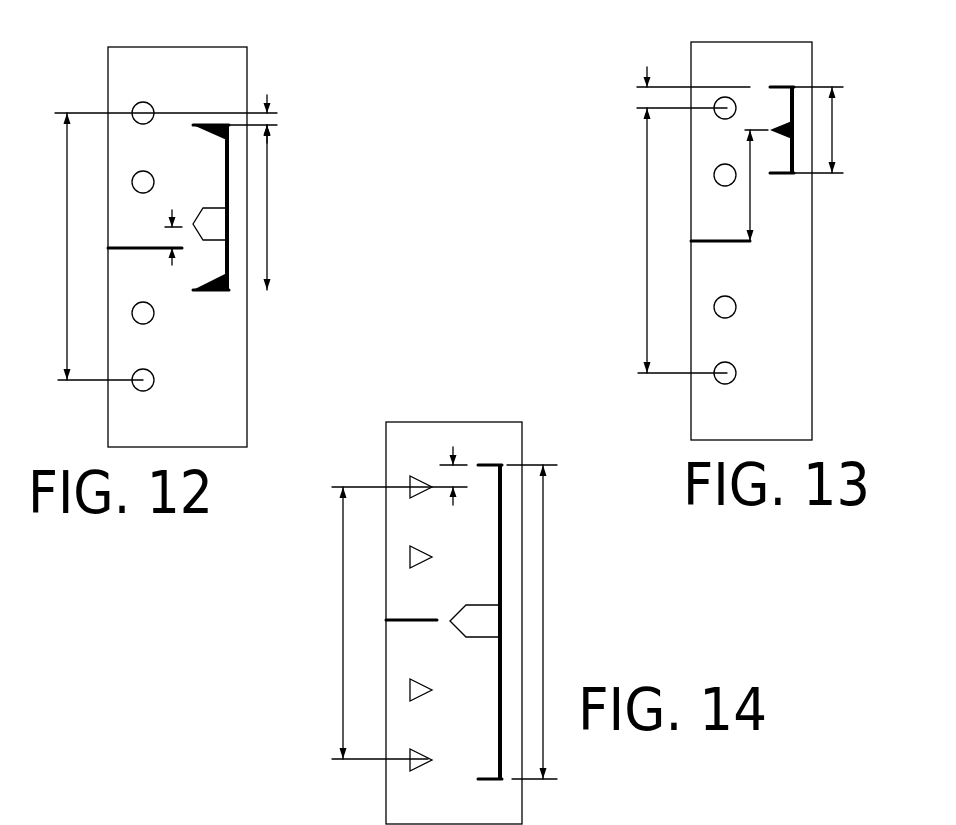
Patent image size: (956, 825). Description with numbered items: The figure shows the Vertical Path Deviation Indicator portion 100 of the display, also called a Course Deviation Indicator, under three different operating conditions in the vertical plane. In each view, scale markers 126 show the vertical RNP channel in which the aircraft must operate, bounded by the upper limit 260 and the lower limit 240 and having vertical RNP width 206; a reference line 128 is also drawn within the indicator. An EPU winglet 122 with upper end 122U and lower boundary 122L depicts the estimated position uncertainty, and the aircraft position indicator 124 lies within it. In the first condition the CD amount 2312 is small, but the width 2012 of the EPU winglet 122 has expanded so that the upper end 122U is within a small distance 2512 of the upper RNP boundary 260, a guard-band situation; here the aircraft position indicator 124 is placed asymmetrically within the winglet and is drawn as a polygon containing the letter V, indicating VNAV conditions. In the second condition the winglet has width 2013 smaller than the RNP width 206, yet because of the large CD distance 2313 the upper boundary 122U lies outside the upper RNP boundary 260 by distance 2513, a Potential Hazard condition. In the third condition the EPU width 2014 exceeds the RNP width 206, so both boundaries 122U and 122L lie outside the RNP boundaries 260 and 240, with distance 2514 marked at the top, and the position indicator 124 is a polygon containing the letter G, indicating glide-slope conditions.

In FIG. 12, the Vertical Path Deviation Indicator portion 100 is at (230, 437).
In FIG. 13, the Vertical Path Deviation Indicator portion 100 is at (790, 429).
In FIG. 14, the Vertical Path Deviation Indicator portion 100 is at (452, 818).
In FIG. 12, the EPU winglet 122 is at (228, 221).
In FIG. 13, the EPU winglet 122 is at (776, 140).
In FIG. 14, the EPU winglet 122 is at (502, 590).
In FIG. 12, the upper end of winglet 122U is at (203, 124).
In FIG. 13, the upper end of winglet 122U is at (790, 86).
In FIG. 14, the upper end of winglet 122U is at (490, 464).
In FIG. 12, the lower boundary of EPU winglet 122L is at (203, 293).
In FIG. 13, the lower boundary of EPU winglet 122L is at (778, 175).
In FIG. 14, the lower boundary of EPU winglet 122L is at (490, 780).
In FIG. 12, the aircraft position indicator 124 is at (210, 207).
In FIG. 13, the aircraft position indicator 124 is at (773, 140).
In FIG. 14, the aircraft position indicator 124 is at (480, 604).
In FIG. 12, the scale markers 126 is at (143, 80).
In FIG. 13, the scale markers 126 is at (724, 56).
In FIG. 14, the scale markers 126 is at (417, 453).
In FIG. 12, the reference line 128 is at (128, 252).
In FIG. 13, the reference line 128 is at (707, 243).
In FIG. 14, the reference line 128 is at (403, 622).
In FIG. 12, the vertical RNP width 206 is at (67, 262).
In FIG. 13, the vertical RNP width 206 is at (647, 230).
In FIG. 14, the vertical RNP width 206 is at (343, 612).
In FIG. 12, the lower limit 240 is at (84, 383).
In FIG. 13, the lower limit 240 is at (670, 372).
In FIG. 14, the lower limit 240 is at (360, 758).
In FIG. 12, the upper limit 260 is at (88, 112).
In FIG. 13, the upper limit 260 is at (670, 110).
In FIG. 14, the upper limit 260 is at (353, 487).
In FIG. 12, the width of EPU winglet 2012 is at (268, 167).
In FIG. 12, the distance 2512 is at (262, 121).
In FIG. 12, the CD amount 2312 is at (172, 235).
In FIG. 13, the width of EPU winglet 2013 is at (833, 122).
In FIG. 13, the upper offset distance 2513 is at (638, 100).
In FIG. 13, the CD distance 2313 is at (747, 217).
In FIG. 14, the EPU width 2014 is at (543, 577).
In FIG. 14, the upper offset distance 2514 is at (457, 475).